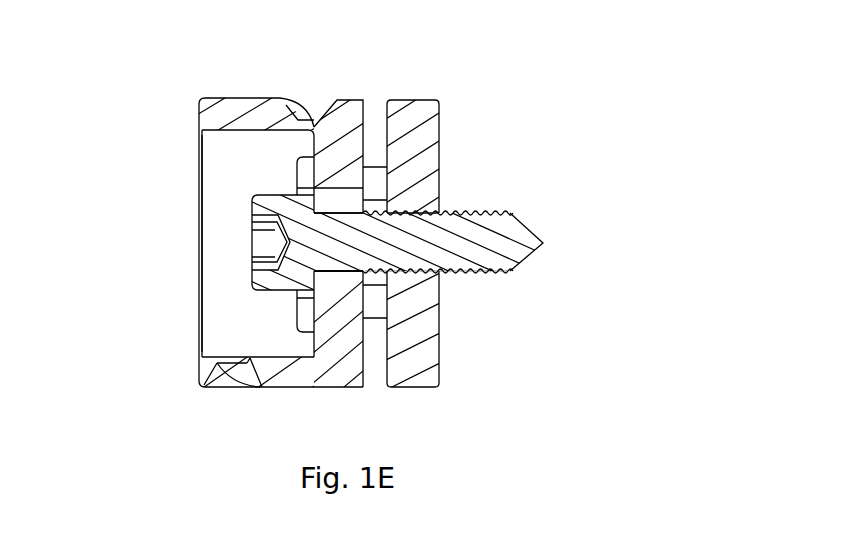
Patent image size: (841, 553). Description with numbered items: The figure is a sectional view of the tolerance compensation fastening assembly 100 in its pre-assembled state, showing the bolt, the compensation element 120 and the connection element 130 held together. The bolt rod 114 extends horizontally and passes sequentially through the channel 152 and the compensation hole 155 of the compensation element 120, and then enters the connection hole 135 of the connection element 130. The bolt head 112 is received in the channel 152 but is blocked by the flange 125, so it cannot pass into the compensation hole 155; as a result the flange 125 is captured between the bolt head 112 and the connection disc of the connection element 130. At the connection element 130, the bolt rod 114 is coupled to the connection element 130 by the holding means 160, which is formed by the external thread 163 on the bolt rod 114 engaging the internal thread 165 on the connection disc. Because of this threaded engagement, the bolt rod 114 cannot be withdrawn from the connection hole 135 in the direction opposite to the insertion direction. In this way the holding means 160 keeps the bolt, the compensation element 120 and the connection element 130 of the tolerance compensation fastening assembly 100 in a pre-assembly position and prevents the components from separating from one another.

The tolerance compensation fastening assembly 100 is at (642, 152).
The bolt head 112 is at (303, 176).
The bolt rod 114 is at (495, 227).
The compensation element 120 is at (239, 110).
The flange 125 is at (373, 113).
The connection element 130 is at (423, 113).
The connection hole 135 is at (447, 210).
The channel 152 is at (230, 320).
The compensation hole 155 is at (333, 285).
The holding means 160 is at (541, 282).
The external thread 163 is at (438, 275).
The internal thread 165 is at (440, 277).